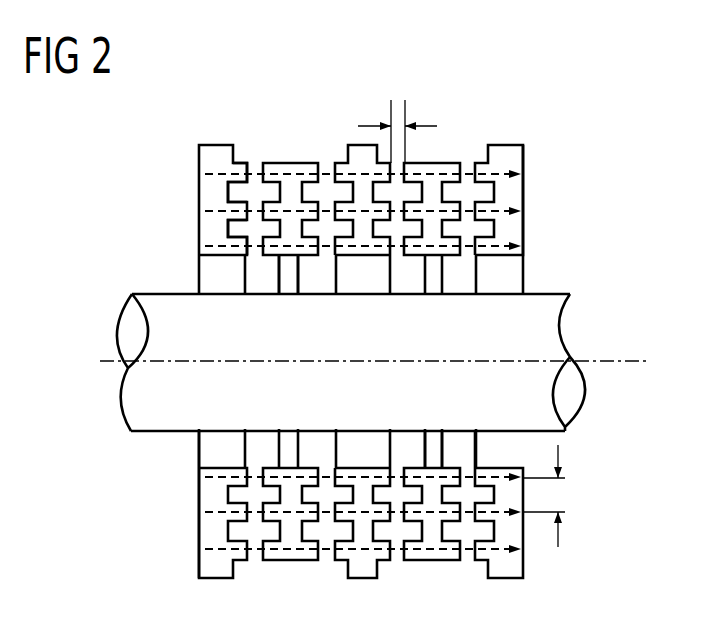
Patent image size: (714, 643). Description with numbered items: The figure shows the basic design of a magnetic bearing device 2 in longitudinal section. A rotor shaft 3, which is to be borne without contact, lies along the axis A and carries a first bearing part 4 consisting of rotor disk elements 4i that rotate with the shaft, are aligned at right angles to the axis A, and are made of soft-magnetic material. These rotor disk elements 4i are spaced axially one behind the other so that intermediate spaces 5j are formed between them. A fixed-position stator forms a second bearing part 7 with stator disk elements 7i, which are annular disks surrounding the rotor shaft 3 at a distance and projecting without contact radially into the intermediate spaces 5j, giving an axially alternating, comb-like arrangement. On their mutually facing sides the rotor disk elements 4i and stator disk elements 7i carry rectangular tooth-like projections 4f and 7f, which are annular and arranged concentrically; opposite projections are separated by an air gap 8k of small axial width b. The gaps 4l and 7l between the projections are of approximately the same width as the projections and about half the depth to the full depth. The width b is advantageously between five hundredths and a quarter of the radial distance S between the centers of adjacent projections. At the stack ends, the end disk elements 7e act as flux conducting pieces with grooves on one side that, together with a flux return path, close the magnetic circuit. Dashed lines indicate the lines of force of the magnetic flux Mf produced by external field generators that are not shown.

The magnetic bearing device 2 is at (628, 535).
The rotor shaft 3 is at (578, 393).
The axis A is at (625, 358).
The first bearing part 4 is at (301, 561).
The rotor disk element 4i is at (280, 164).
The tooth-like projection 4f is at (270, 545).
The gap 4l is at (238, 192).
The intermediate space 5j is at (266, 290).
The second bearing part 7 is at (223, 144).
The end disk element 7e is at (523, 160).
The tooth-like projection 7f is at (233, 518).
The stator disk element 7i is at (357, 565).
The gap 7l is at (238, 227).
The air gap 8k is at (466, 163).
The width of the air gap b is at (397, 131).
The radial distance S is at (544, 496).
The magnetic flux Mf is at (490, 212).